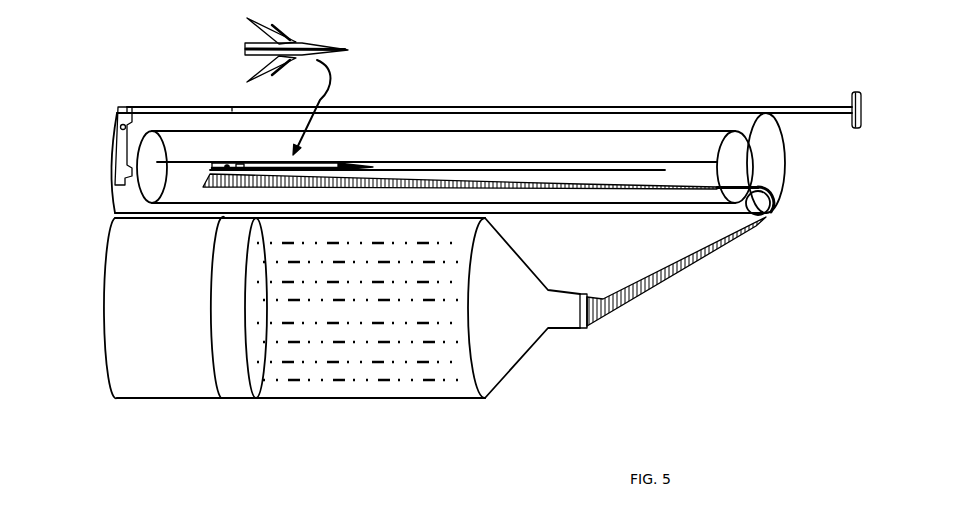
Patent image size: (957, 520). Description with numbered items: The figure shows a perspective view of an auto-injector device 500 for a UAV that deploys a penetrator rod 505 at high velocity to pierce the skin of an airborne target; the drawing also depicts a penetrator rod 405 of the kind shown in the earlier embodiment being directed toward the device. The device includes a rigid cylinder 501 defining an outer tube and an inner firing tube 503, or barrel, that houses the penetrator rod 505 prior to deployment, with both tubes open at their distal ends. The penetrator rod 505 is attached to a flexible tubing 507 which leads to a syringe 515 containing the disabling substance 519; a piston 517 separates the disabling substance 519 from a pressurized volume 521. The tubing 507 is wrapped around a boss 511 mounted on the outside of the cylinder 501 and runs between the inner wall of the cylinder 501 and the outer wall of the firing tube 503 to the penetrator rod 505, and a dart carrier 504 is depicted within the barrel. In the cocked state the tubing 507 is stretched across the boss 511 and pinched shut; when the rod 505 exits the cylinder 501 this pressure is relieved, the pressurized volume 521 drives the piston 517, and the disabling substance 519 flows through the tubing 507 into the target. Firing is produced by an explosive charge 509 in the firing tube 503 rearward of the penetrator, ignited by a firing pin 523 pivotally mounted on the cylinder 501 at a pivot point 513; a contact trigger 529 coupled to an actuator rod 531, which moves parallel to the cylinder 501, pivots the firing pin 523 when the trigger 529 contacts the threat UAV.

The dart 405 is at (340, 33).
The auto-injector device 500 is at (727, 368).
The rigid cylinder 501 is at (783, 187).
The firing tube 503 is at (684, 131).
The dart carrier 504 is at (328, 168).
The penetrator rod 505 is at (614, 160).
The flexible tubing 507 is at (358, 178).
The explosive charge 509 is at (150, 192).
The boss 511 is at (760, 204).
The pivot point 513 is at (117, 128).
The syringe 515 is at (507, 372).
The piston 517 is at (227, 387).
The disabling substance 519 is at (352, 385).
The pressurized volume 521 is at (151, 357).
The firing pin 523 is at (114, 177).
The contact trigger 529 is at (852, 93).
The actuator rod 531 is at (398, 104).